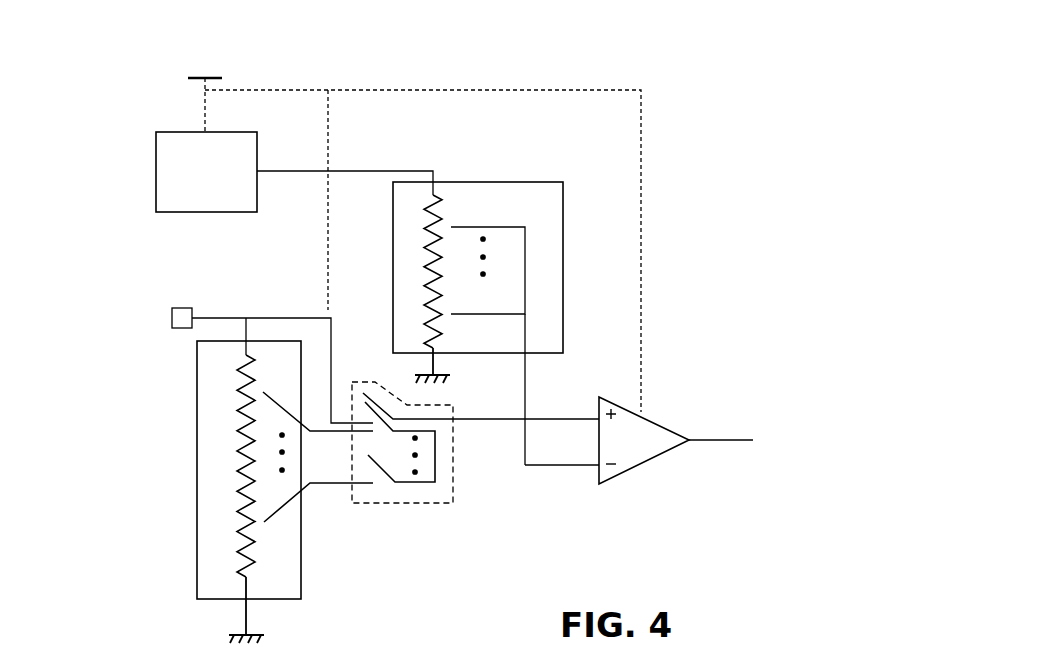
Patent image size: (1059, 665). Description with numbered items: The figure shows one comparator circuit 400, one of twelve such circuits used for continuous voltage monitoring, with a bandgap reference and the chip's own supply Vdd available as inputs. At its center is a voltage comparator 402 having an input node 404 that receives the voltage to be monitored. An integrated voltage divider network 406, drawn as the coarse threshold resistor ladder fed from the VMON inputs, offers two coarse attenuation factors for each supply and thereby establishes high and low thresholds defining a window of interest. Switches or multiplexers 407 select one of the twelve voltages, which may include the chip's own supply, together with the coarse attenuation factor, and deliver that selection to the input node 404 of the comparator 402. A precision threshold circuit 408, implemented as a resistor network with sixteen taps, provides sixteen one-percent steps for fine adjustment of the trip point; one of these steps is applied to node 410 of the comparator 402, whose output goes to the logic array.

The comparator circuit 400 is at (645, 56).
The voltage comparator 402 is at (655, 446).
The input node 404 is at (605, 405).
The voltage divider network 406 is at (290, 570).
The switches or multiplexers 407 is at (430, 495).
The precision threshold circuit 408 is at (548, 210).
The node 410 is at (608, 470).